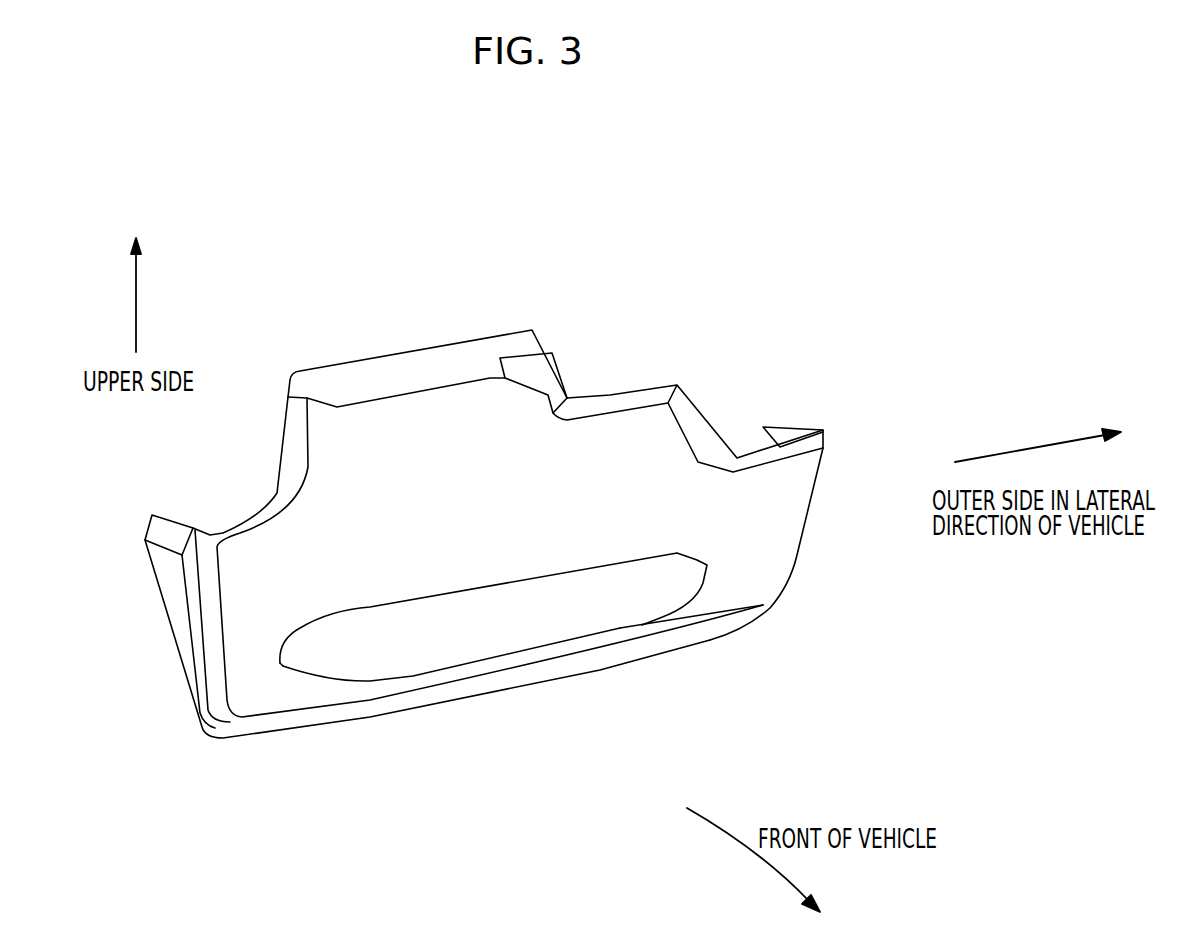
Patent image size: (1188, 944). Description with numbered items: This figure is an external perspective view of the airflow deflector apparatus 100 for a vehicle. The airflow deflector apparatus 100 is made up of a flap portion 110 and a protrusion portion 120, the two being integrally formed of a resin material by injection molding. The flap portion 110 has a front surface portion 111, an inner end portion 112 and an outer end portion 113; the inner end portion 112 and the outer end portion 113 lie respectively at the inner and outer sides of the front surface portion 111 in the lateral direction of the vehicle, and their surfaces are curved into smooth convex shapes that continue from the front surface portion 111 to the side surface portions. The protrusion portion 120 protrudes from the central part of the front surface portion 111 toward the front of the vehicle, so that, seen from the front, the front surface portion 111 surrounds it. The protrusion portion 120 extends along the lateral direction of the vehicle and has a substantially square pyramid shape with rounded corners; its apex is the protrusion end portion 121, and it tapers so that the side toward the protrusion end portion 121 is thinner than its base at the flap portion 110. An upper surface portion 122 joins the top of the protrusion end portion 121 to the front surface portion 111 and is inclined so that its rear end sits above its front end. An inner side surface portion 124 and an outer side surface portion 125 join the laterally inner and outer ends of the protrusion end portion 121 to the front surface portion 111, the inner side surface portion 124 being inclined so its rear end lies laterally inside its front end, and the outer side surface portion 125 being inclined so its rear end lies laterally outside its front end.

The airflow deflector apparatus 100 is at (820, 235).
The flap portion 110 is at (637, 373).
The front surface portion 111 is at (417, 559).
The inner end portion 112 is at (202, 635).
The outer end portion 113 is at (807, 488).
The protrusion portion 120 is at (603, 645).
The protrusion end portion 121 is at (413, 674).
The upper surface portion 122 is at (497, 608).
The inner side surface portion 124 is at (295, 675).
The outer side surface portion 125 is at (690, 582).